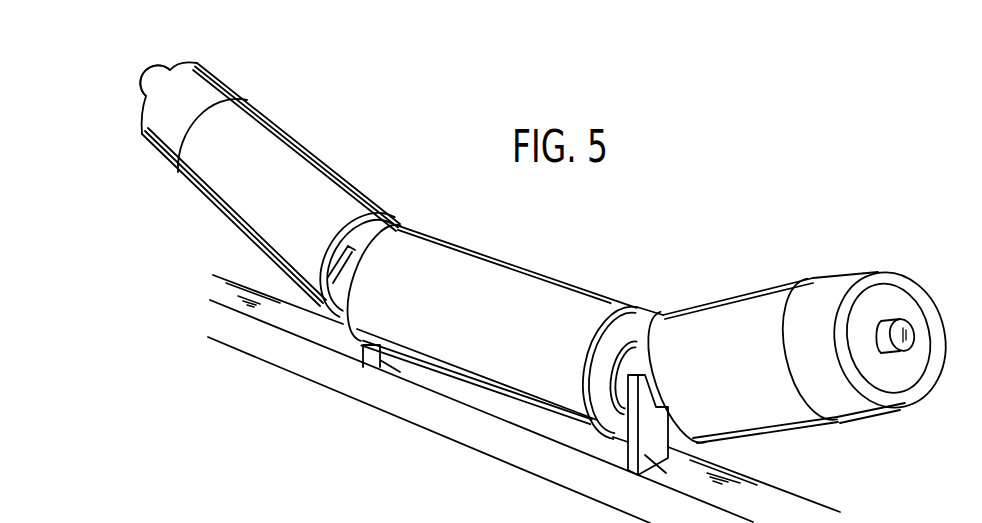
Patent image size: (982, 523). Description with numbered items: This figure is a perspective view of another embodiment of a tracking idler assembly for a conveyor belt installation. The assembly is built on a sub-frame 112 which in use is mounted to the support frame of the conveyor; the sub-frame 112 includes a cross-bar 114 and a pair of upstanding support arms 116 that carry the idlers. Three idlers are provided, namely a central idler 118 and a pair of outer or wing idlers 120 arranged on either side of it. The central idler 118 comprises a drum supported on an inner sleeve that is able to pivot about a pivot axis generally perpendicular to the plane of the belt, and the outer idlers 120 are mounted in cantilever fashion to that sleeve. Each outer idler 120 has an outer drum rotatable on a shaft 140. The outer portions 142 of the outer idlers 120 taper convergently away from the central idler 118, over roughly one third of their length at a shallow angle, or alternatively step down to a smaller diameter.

The sub-frame 112 is at (812, 503).
The cross-bar 114 is at (518, 390).
The upstanding support arms 116 is at (487, 434).
The central idler 118 is at (498, 328).
The outer idlers 120 is at (522, 256).
The shaft 140 is at (150, 520).
The outer portions 142 is at (549, 243).